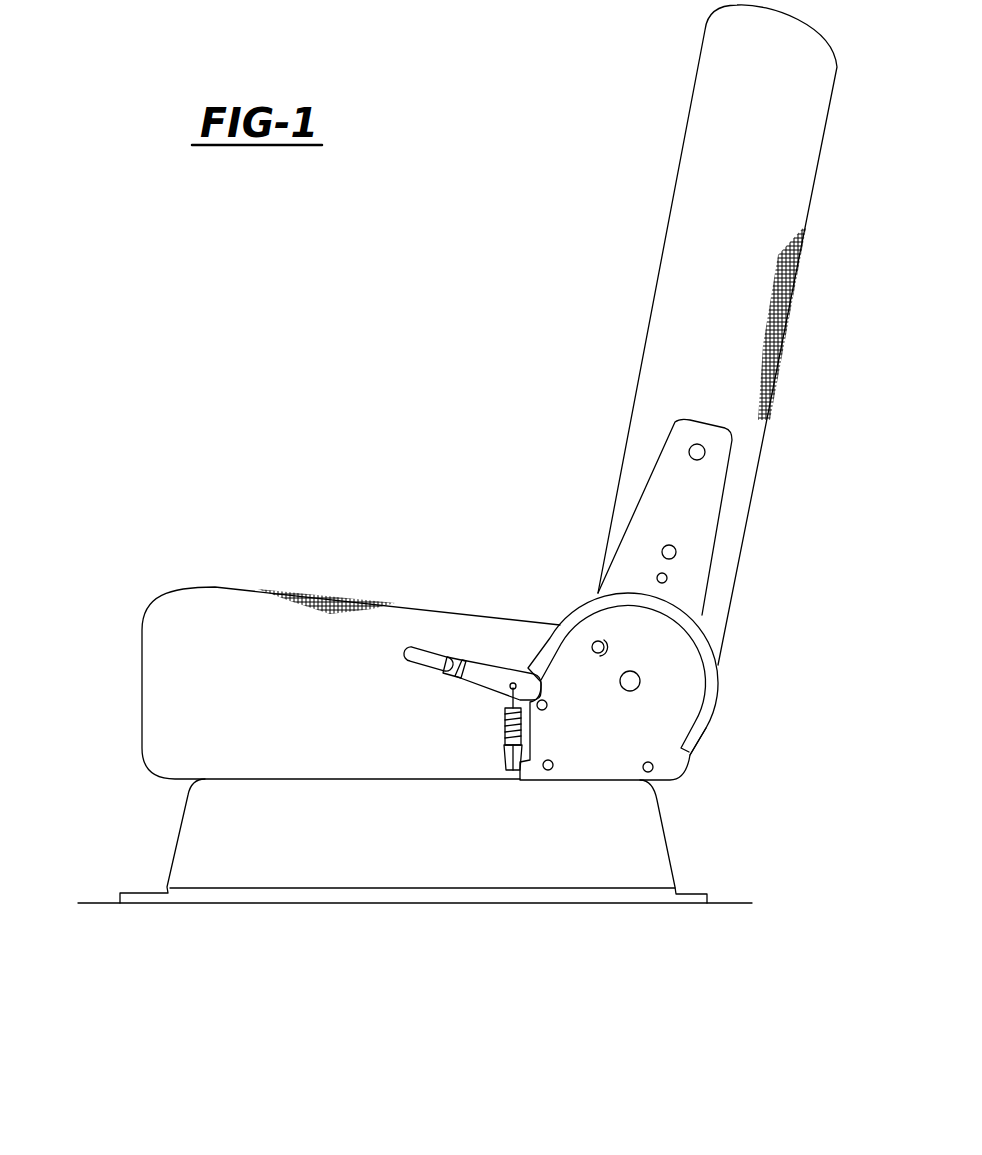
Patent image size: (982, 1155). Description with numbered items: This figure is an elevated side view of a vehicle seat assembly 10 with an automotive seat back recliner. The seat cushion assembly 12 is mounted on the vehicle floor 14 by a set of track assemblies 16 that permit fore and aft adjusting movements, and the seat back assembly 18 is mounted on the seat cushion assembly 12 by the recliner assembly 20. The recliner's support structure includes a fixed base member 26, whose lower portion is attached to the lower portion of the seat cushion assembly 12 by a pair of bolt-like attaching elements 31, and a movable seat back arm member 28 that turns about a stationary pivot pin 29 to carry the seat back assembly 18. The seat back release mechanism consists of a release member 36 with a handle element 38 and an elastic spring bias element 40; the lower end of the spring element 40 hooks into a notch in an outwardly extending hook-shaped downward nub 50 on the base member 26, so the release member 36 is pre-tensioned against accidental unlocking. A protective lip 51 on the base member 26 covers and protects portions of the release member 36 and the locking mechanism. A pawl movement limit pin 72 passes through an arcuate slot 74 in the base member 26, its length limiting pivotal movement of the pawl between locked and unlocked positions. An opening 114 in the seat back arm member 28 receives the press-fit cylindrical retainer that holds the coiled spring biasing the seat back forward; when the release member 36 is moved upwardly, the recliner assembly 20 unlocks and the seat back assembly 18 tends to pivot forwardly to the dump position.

The vehicle seat assembly 10 is at (420, 395).
The seat cushion assembly 12 is at (150, 706).
The vehicle floor 14 is at (440, 925).
The track assemblies 16 is at (270, 897).
The seat back assembly 18 is at (797, 212).
The recliner assembly 20 is at (615, 644).
The fixed base member 26 is at (600, 775).
The seat back arm member 28 is at (657, 500).
The stationary pivot pin 29 is at (640, 681).
The bolt-like attaching elements 31 is at (547, 773).
The release member 36 is at (480, 672).
The handle element 38 is at (418, 650).
The elastic spring bias element 40 is at (503, 728).
The hook-shaped downward nub 50 is at (500, 765).
The protective lip 51 is at (698, 732).
The pawl movement limit pin 72 is at (600, 641).
The arcuate slot 74 is at (596, 650).
The opening 114 is at (668, 578).